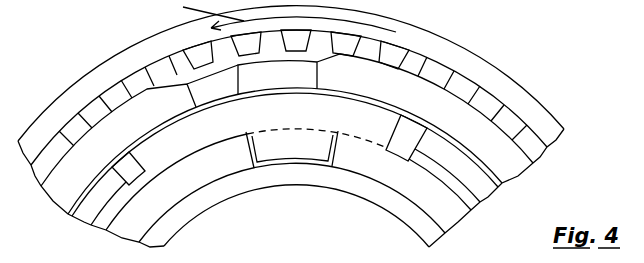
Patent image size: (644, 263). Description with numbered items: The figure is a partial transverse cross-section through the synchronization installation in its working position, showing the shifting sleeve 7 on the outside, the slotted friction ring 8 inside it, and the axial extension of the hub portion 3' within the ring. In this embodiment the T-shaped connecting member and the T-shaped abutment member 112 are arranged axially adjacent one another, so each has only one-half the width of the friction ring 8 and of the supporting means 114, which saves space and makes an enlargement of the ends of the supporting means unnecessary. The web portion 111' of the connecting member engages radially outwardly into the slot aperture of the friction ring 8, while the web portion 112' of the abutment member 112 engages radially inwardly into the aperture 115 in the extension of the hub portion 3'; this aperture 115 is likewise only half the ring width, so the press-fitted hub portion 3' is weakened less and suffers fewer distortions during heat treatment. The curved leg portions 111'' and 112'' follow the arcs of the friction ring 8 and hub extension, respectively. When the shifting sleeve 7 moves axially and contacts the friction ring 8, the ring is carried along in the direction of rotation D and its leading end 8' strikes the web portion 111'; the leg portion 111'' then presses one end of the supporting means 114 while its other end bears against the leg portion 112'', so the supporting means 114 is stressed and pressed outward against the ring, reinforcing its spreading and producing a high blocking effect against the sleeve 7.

The shifting sleeve 7 is at (465, 63).
The friction ring 8 is at (293, 88).
The end of the friction ring 8' is at (287, 98).
The web portion of the connecting member 111' is at (277, 77).
The leg portion of the connecting member 111'' is at (269, 183).
The abutment member 112 is at (285, 152).
The web portion of the abutment member 112' is at (292, 149).
The leg portion of the abutment member 112'' is at (330, 144).
The supporting means 114 is at (483, 181).
The aperture 115 is at (292, 163).
The hub portion 3' is at (291, 188).
The direction of rotation D is at (279, 16).